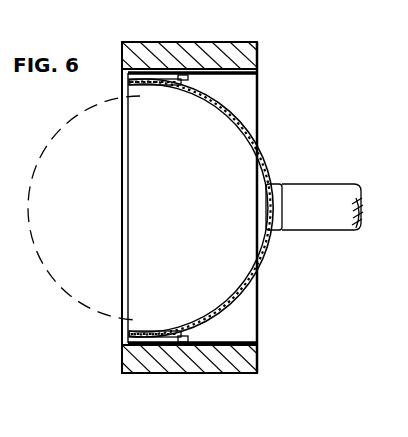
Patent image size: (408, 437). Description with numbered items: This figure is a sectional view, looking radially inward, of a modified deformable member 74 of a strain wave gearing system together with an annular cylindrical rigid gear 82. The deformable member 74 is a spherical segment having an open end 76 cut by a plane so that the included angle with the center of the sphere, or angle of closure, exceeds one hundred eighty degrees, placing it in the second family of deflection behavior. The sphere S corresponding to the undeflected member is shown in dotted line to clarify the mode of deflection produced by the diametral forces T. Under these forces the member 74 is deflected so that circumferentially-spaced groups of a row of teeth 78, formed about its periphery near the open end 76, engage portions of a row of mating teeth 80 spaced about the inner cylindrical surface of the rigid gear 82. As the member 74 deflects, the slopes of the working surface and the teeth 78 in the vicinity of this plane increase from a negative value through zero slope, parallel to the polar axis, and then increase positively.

The deformable member 74 is at (263, 151).
The open end 76 is at (128, 268).
The row of teeth 78 is at (179, 74).
The row of mating teeth 80 is at (189, 76).
The annular cylindrical rigid gear 82 is at (258, 56).
The sphere S is at (72, 134).
The diametral forces T is at (153, 92).